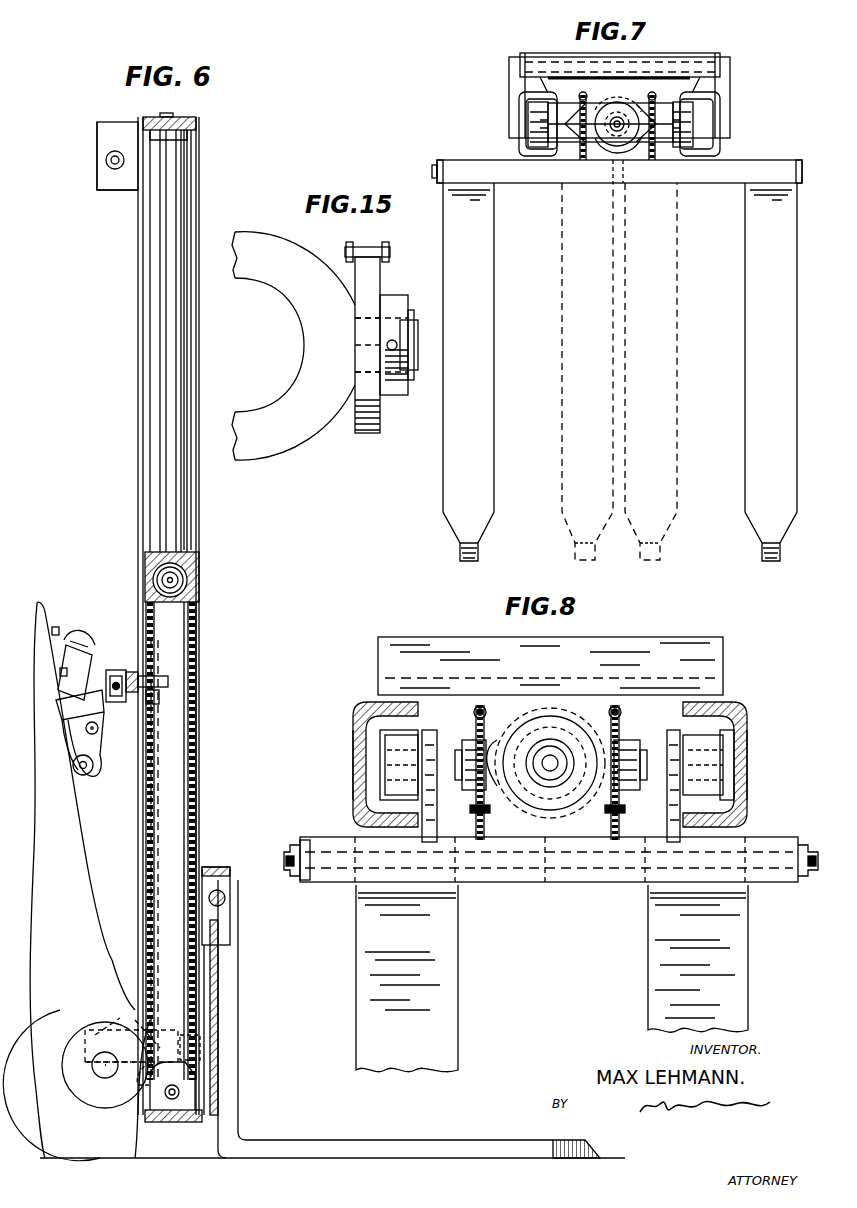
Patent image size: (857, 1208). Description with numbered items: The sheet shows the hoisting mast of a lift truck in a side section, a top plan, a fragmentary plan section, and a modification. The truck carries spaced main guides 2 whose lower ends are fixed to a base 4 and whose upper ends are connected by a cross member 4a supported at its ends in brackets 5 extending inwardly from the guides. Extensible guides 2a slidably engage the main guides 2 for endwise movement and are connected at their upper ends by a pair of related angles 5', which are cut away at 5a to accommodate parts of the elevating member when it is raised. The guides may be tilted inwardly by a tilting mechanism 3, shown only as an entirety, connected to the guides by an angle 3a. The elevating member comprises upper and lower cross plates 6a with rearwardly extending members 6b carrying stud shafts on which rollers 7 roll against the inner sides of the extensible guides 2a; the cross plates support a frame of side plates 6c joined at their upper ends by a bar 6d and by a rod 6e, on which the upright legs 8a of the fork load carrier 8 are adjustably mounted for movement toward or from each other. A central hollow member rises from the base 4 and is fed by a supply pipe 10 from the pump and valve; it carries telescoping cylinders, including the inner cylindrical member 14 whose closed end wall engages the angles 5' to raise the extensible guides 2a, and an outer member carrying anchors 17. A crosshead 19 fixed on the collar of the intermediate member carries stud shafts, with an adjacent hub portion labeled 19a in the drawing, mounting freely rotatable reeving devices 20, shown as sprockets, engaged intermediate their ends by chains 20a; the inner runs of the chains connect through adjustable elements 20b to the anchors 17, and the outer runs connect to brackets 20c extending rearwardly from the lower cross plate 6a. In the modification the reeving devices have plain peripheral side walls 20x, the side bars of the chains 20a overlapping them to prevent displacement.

In FIG. 6, the main guides 2 is at (199, 527).
In FIG. 7, the main guides 2 is at (720, 150).
In FIG. 8, the main guides 2 is at (354, 780).
In FIG. 6, the extensible guides 2a is at (193, 497).
In FIG. 8, the extensible guides 2a is at (763, 778).
In FIG. 6, the tilting mechanism 3 is at (112, 796).
In FIG. 6, the angle 3a is at (126, 678).
In FIG. 8, the angle 3a is at (722, 668).
In FIG. 6, the base 4 is at (182, 1122).
In FIG. 7, the cross member 4a is at (548, 70).
In FIG. 6, the brackets 5 is at (180, 111).
In FIG. 7, the brackets 5 is at (618, 125).
In FIG. 7, the angles 5' is at (619, 83).
In FIG. 7, the cut-away 5a is at (658, 160).
In FIG. 6, the cross plates 6a is at (232, 988).
In FIG. 8, the cross plates 6a is at (304, 850).
In FIG. 8, the rearwardly extending members 6b is at (433, 740).
In FIG. 7, the side plates 6c is at (438, 172).
In FIG. 6, the bar 6d is at (218, 866).
In FIG. 7, the bar 6d is at (490, 172).
In FIG. 8, the bar 6d is at (487, 882).
In FIG. 6, the rod 6e is at (226, 898).
In FIG. 8, the rod 6e is at (290, 848).
In FIG. 8, the rollers 7 is at (356, 730).
In FIG. 6, the load carrier 8 is at (272, 1136).
In FIG. 7, the load carrier 8 is at (754, 216).
In FIG. 8, the upright legs 8a is at (368, 900).
In FIG. 6, the supply pipe 10 is at (142, 1085).
In FIG. 6, the inner cylindrical member 14 is at (158, 306).
In FIG. 6, the anchors 17 is at (161, 678).
In FIG. 15, the crosshead 19 is at (288, 435).
In FIG. 8, the crosshead 19 is at (545, 810).
In FIG. 15, the pinion 19a is at (420, 372).
In FIG. 8, the pinion 19a is at (650, 795).
In FIG. 6, the reeving devices 20 is at (196, 614).
In FIG. 8, the reeving devices 20 is at (486, 712).
In FIG. 6, the flexible members 20a is at (196, 690).
In FIG. 8, the flexible members 20a is at (478, 706).
In FIG. 6, the adjustable elements 20b is at (162, 704).
In FIG. 6, the brackets 20c is at (216, 1060).
In FIG. 8, the brackets 20c is at (611, 812).
In FIG. 15, the reeving devices with plain peripheral side walls 20x is at (365, 434).